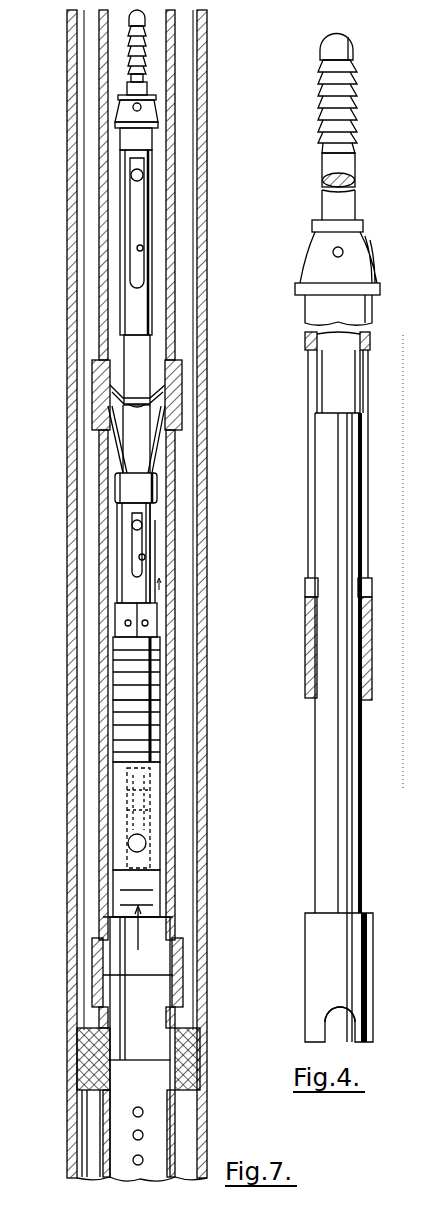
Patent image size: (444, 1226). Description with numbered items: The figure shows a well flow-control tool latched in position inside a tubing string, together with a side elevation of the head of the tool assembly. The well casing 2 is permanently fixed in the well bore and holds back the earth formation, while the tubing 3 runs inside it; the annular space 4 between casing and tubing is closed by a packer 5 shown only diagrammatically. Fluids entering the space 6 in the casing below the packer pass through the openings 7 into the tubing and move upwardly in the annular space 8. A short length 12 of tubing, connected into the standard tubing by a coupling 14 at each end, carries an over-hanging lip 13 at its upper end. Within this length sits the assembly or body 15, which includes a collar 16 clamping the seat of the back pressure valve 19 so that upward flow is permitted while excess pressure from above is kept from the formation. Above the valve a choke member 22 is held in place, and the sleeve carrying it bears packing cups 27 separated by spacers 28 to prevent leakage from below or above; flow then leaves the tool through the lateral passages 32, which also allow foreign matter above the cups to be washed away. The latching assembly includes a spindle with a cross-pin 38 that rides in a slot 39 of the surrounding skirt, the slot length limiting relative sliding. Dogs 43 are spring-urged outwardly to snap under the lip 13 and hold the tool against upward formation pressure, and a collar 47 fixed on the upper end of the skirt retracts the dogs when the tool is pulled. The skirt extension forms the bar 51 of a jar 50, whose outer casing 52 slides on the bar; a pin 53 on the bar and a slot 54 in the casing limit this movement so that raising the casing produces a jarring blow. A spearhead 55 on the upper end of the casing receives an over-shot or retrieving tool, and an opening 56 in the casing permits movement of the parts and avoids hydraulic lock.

In FIG. 7, the well casing 2 is at (205, 285).
In FIG. 7, the tubing 3 is at (176, 320).
In FIG. 7, the annular space 4 is at (185, 1012).
In FIG. 7, the packer 5 is at (193, 1052).
In FIG. 7, the space 6 is at (185, 1137).
In FIG. 7, the openings 7 is at (170, 1110).
In FIG. 7, the annular space 8 is at (150, 945).
In FIG. 7, the short length of tubing 12 is at (165, 510).
In FIG. 7, the over-hanging lip 13 is at (166, 402).
In FIG. 7, the coupling 14 is at (178, 382).
In FIG. 7, the assembly or body 15 is at (150, 582).
In FIG. 4, the assembly or body 15 is at (377, 980).
In FIG. 7, the collar 16 is at (150, 895).
In FIG. 7, the back pressure valve 19 is at (141, 862).
In FIG. 7, the choke member 22 is at (146, 790).
In FIG. 7, the packing rings or cups 27 is at (156, 732).
In FIG. 7, the spacers 28 is at (156, 686).
In FIG. 7, the lateral passages 32 is at (146, 623).
In FIG. 7, the cross-pin 38 is at (138, 527).
In FIG. 7, the slot 39 is at (143, 557).
In FIG. 4, the slot 39 is at (352, 1022).
In FIG. 7, the dogs 43 is at (152, 445).
In FIG. 7, the collar 47 is at (153, 488).
In FIG. 4, the jar 50 is at (370, 482).
In FIG. 4, the bar 51 is at (335, 470).
In FIG. 7, the outer casing 52 is at (125, 240).
In FIG. 7, the pin 53 is at (140, 175).
In FIG. 4, the pin 53 is at (371, 584).
In FIG. 7, the slot 54 is at (142, 248).
In FIG. 4, the slot 54 is at (362, 562).
In FIG. 7, the spearhead 55 is at (143, 46).
In FIG. 4, the spearhead 55 is at (356, 128).
In FIG. 7, the opening 56 is at (141, 108).
In FIG. 4, the opening 56 is at (343, 252).